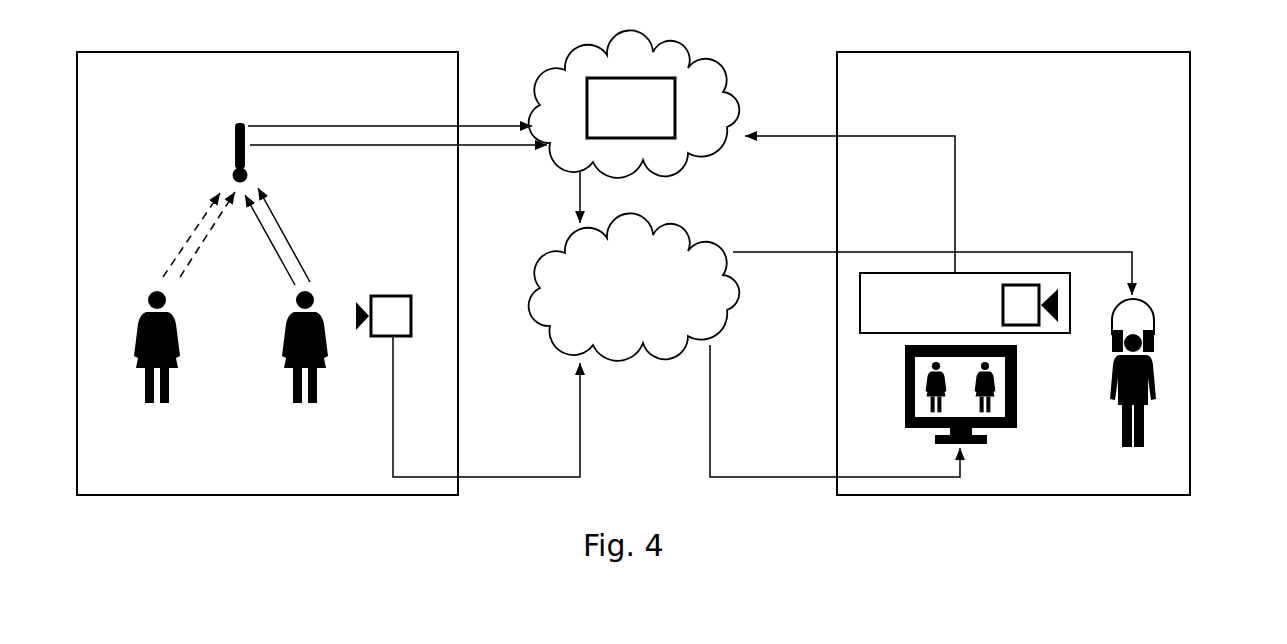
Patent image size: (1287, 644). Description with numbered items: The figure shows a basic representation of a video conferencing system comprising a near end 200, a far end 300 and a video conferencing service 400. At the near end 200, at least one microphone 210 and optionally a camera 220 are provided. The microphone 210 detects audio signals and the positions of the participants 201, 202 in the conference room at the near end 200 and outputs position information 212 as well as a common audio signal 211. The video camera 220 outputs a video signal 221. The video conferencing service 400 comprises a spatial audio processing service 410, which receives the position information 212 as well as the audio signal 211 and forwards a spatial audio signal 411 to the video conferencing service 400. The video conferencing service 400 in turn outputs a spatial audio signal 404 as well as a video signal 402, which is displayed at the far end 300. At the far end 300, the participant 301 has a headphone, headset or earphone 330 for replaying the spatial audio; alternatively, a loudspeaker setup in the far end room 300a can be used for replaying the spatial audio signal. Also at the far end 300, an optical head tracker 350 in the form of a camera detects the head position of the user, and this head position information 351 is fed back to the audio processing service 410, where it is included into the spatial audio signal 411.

The near end 200 is at (267, 252).
The participant 201 is at (183, 317).
The participant 202 is at (286, 315).
The microphone 210 is at (209, 153).
The common audio signal 211 is at (398, 164).
The position information 212 is at (390, 108).
The camera 220 is at (386, 299).
The video signal 221 is at (486, 407).
The video conferencing service 400 is at (634, 286).
The spatial audio processing service 410 is at (650, 138).
The spatial audio signal 411 is at (552, 197).
The spatial audio signal 404 is at (932, 273).
The video signal 402 is at (835, 411).
The head position information 351 is at (798, 136).
The far end 300 is at (1013, 253).
The far end room 300a is at (1137, 89).
The headset 330 is at (1155, 312).
The optical head tracker 350 is at (1033, 333).
The participant 301 is at (1145, 405).